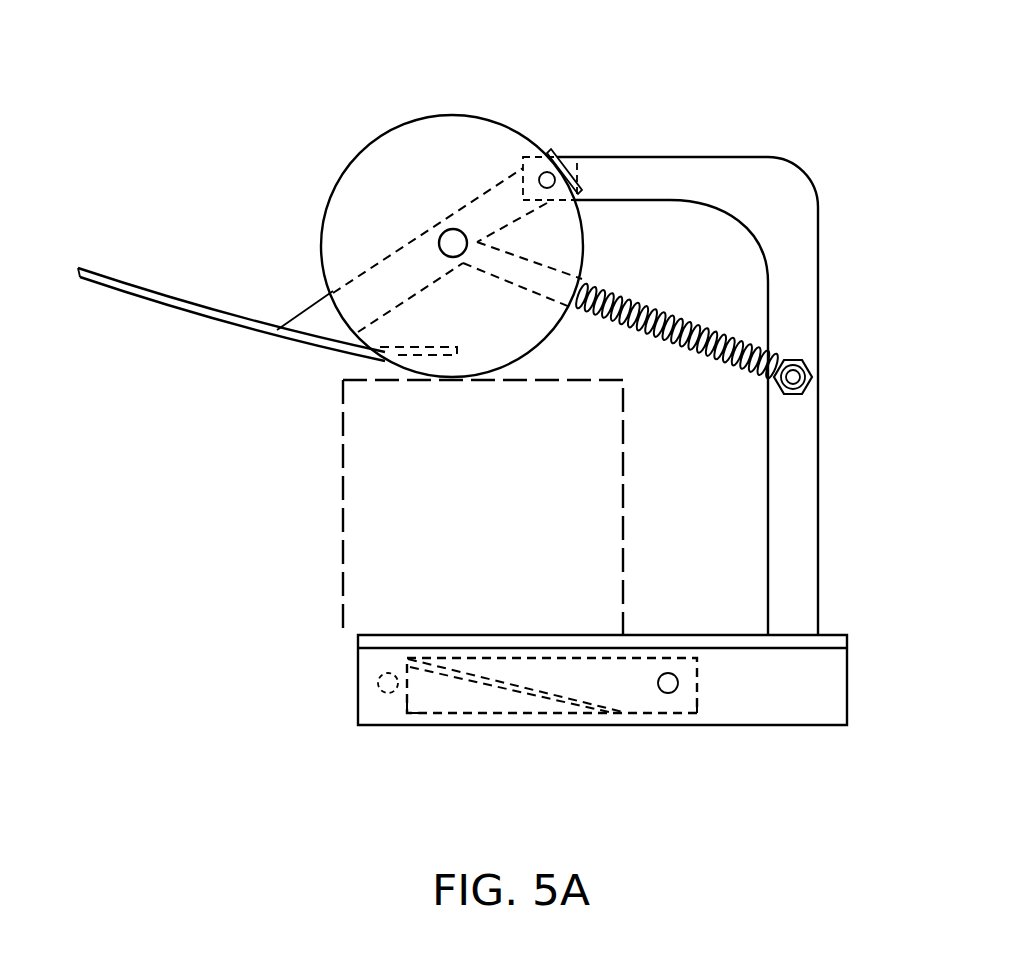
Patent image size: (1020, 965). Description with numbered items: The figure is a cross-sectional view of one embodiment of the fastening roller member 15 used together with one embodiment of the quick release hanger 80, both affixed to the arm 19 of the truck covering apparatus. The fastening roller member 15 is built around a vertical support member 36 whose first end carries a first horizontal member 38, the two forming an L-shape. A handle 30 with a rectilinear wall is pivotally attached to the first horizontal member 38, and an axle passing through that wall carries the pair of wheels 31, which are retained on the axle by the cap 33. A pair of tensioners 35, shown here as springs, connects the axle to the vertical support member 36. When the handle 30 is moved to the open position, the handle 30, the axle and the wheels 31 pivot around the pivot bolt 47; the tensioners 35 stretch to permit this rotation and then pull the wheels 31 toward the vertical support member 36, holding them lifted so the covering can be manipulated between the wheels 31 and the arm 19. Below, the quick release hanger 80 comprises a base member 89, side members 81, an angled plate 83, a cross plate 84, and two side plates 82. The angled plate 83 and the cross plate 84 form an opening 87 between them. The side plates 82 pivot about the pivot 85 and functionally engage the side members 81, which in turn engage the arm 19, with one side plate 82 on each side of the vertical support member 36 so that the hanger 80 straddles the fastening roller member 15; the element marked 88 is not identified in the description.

The fastening roller member 15 is at (284, 126).
The arm 19 is at (590, 470).
The handle 30 is at (120, 279).
The wheels 31 is at (418, 123).
The cap 33 is at (452, 257).
The tensioners 35 is at (672, 306).
The vertical support member 36 is at (819, 318).
The first horizontal member 38 is at (707, 168).
The pivot bolt 47 is at (571, 162).
The quick release hanger 80 is at (314, 762).
The side members 81 is at (823, 706).
The side plates 82 is at (623, 690).
The angled plate 83 is at (485, 688).
The cross plate 84 is at (420, 722).
The pivot 85 is at (668, 692).
The opening 87 is at (410, 690).
The end wall 88 is at (697, 706).
The base member 89 is at (555, 727).